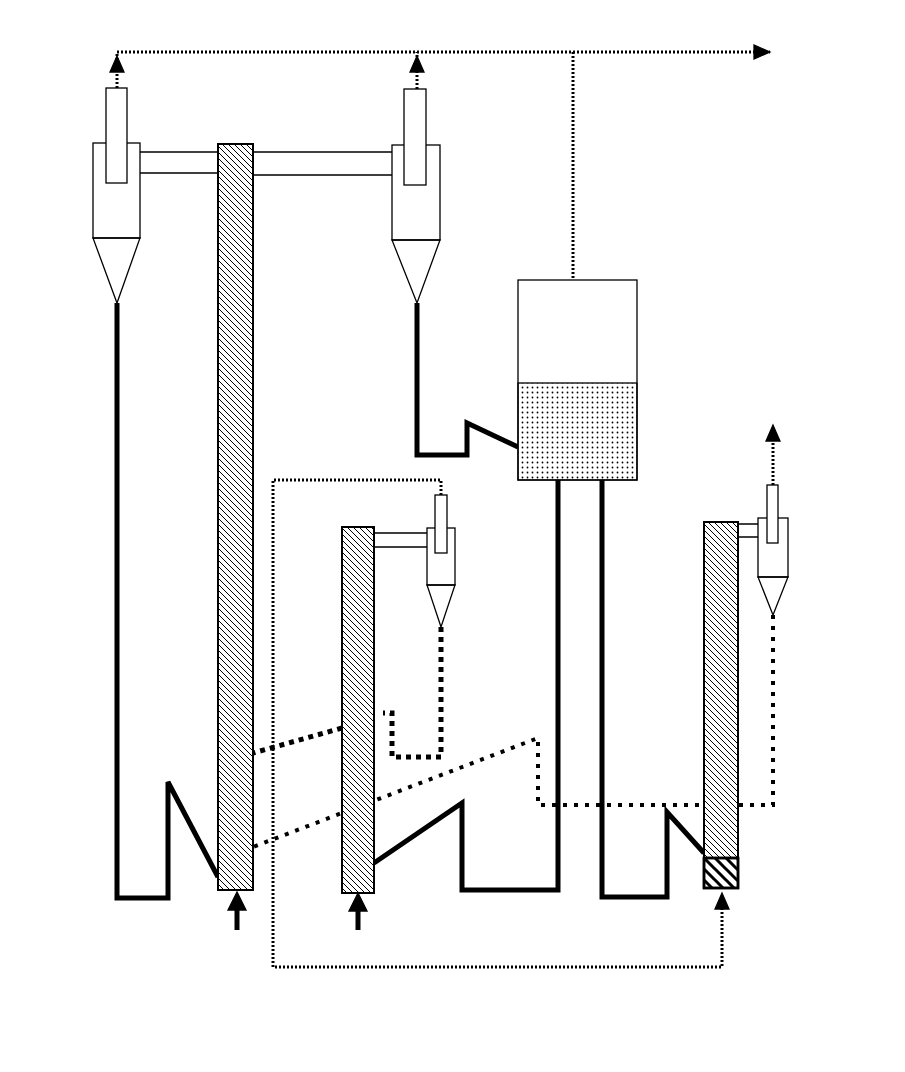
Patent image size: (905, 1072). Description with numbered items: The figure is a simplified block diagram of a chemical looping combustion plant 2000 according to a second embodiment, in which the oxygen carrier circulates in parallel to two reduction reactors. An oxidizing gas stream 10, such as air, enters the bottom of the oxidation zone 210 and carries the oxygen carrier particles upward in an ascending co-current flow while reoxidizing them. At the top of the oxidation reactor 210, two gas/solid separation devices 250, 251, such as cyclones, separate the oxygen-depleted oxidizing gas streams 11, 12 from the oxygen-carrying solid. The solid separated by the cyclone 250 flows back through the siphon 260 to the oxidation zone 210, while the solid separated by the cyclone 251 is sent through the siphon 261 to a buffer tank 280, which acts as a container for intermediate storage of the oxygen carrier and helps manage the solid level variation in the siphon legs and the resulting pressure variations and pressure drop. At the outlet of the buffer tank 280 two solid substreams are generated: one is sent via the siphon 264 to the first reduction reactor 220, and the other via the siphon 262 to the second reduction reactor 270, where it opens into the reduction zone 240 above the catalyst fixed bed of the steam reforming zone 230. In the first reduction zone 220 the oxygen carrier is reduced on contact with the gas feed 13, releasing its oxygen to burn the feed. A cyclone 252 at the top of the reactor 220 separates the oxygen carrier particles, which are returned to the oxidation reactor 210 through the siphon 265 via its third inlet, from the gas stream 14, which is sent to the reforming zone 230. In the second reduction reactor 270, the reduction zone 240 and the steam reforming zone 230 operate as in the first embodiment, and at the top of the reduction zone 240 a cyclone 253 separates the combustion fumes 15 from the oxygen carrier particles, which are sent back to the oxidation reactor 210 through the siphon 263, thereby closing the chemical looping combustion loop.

The CLC plant 2000 is at (72, 86).
The oxidizing gas stream 10 is at (232, 929).
The oxygen-depleted oxidizing gas stream 11 is at (440, 66).
The oxygen-depleted oxidizing gas stream 12 is at (434, 70).
The gas feed 13 is at (357, 930).
The gas stream 14 is at (516, 723).
The combustion fumes 15 is at (775, 442).
The oxidation zone 210 is at (218, 366).
The first reduction zone 220 is at (340, 612).
The steam reforming zone 230 is at (740, 870).
The second reduction zone 240 is at (740, 710).
The gas/solid separation device 250 is at (93, 220).
The gas/solid separation device 251 is at (441, 212).
The cyclone 252 is at (412, 530).
The cyclone 253 is at (790, 525).
The siphon 260 is at (115, 650).
The siphon 261 is at (419, 360).
The siphon 262 is at (604, 545).
The siphon 263 is at (778, 650).
The siphon 264 is at (556, 545).
The siphon 265 is at (445, 690).
The second reduction reactor 270 is at (820, 680).
The buffer tank 280 is at (638, 340).